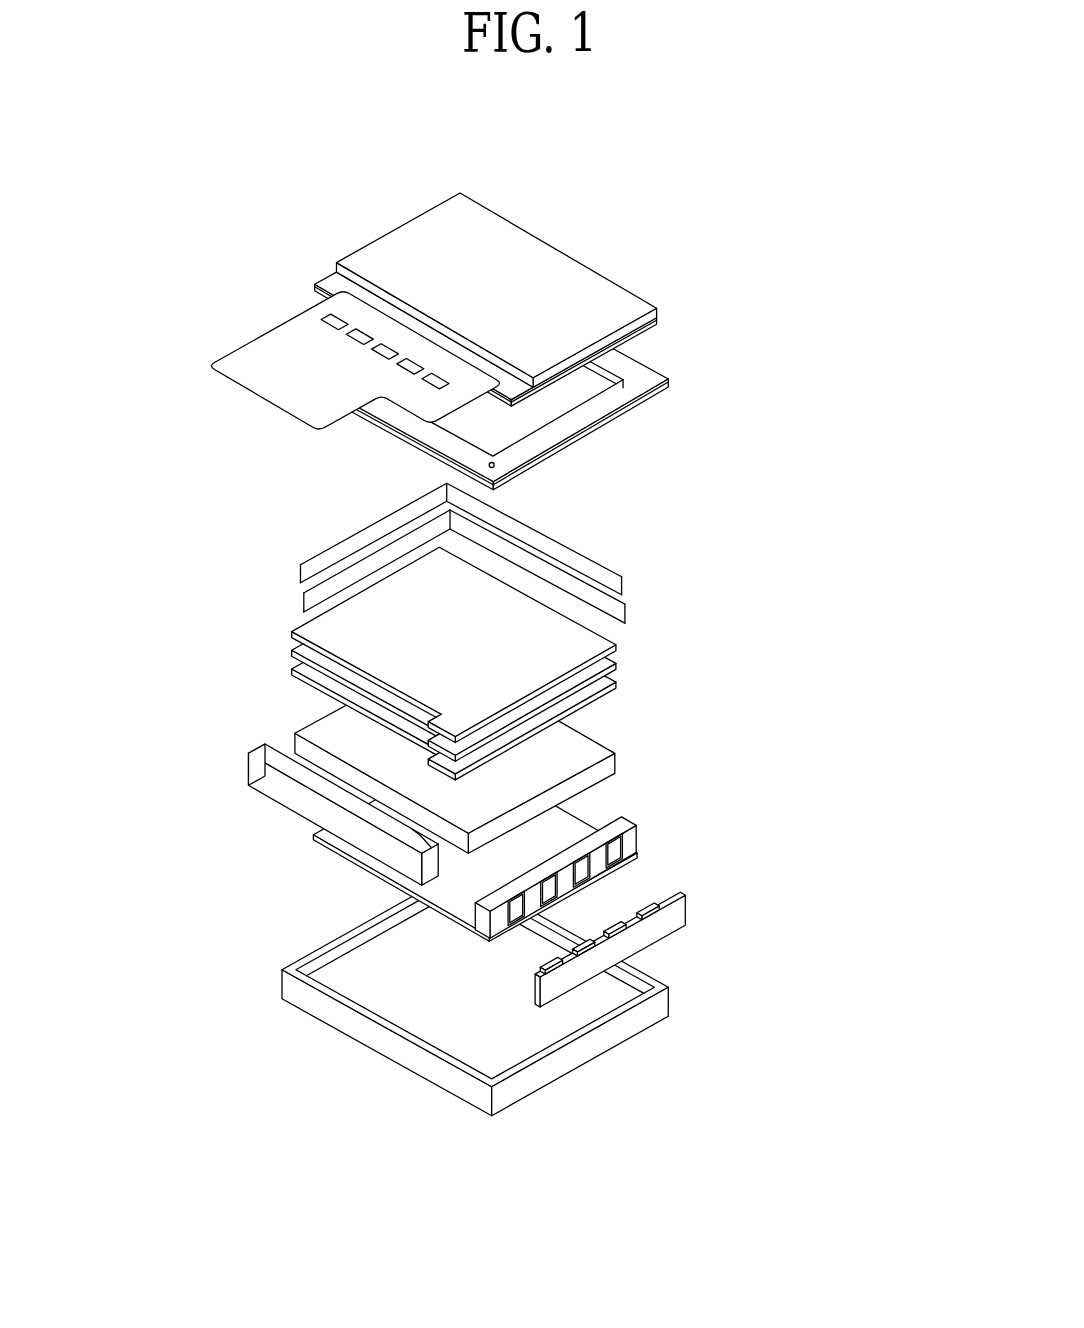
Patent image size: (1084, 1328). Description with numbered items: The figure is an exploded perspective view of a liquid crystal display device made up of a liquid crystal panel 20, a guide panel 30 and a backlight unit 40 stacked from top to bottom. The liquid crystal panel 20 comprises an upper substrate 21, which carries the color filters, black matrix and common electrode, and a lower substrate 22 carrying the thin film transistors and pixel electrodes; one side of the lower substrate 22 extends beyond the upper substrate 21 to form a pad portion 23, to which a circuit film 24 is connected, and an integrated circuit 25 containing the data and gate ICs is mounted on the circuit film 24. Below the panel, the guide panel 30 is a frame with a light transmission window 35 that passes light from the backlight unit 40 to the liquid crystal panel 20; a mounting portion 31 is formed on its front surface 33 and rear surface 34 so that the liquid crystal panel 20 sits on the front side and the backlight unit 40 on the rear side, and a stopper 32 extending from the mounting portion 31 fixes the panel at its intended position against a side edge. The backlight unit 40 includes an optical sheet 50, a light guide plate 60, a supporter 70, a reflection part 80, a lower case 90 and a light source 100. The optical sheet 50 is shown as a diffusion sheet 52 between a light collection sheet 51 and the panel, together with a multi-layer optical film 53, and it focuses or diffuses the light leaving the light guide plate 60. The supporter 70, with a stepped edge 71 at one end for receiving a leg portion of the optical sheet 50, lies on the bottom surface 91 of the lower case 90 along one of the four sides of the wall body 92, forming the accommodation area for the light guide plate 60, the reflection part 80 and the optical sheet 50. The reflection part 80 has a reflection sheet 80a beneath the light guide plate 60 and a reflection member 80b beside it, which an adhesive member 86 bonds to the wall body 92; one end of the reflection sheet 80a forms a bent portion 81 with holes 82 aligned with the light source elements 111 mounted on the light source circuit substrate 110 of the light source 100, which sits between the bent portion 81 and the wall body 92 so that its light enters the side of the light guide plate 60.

The liquid crystal panel 20 is at (713, 202).
The upper substrate 21 is at (533, 258).
The lower substrate 22 is at (652, 319).
The pad portion 23 is at (328, 273).
The circuit film 24 is at (302, 334).
The integrated circuit 25 is at (327, 318).
The guide panel 30 is at (593, 448).
The mounting portion 31 is at (447, 442).
The stopper 32 is at (505, 466).
The front surface 33 is at (655, 370).
The rear surface 34 is at (665, 391).
The light transmission window 35 is at (482, 435).
The backlight unit 40 is at (808, 516).
The optical sheet 50 is at (136, 666).
The light collection sheet 51 is at (290, 678).
The diffusion sheet 52 is at (290, 658).
The multi-layer optical film 53 is at (290, 636).
The light guide plate 60 is at (337, 740).
The supporter 70 is at (272, 786).
The stepped edge 71 is at (413, 843).
The reflection part 80 is at (774, 671).
The reflection sheet 80a is at (620, 795).
The reflection member 80b is at (627, 622).
The bent portion 81 is at (625, 822).
The hole 82 is at (620, 848).
The adhesive member 86 is at (627, 587).
The lower case 90 is at (685, 990).
The bottom surface 91 is at (512, 1040).
The wall body 92 is at (593, 1040).
The light source 100 is at (787, 837).
The light source circuit substrate 110 is at (675, 915).
The light source element 111 is at (667, 900).